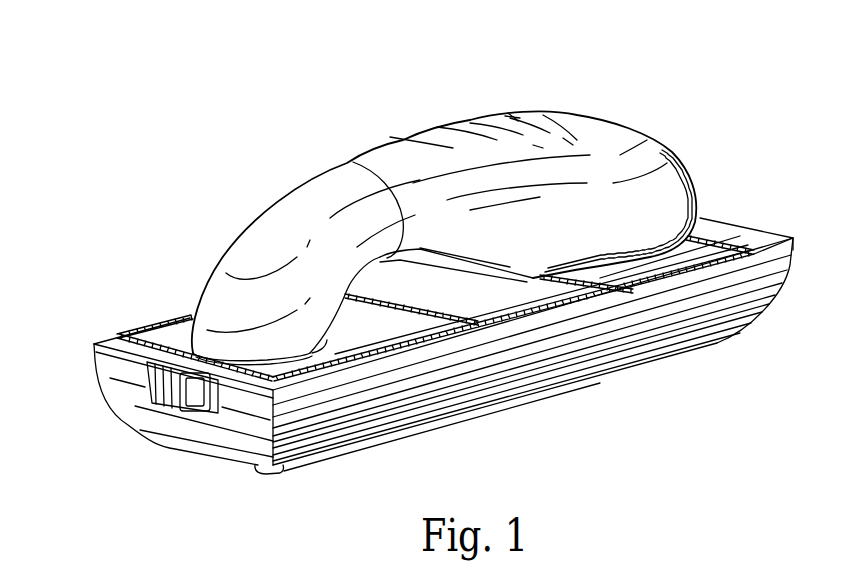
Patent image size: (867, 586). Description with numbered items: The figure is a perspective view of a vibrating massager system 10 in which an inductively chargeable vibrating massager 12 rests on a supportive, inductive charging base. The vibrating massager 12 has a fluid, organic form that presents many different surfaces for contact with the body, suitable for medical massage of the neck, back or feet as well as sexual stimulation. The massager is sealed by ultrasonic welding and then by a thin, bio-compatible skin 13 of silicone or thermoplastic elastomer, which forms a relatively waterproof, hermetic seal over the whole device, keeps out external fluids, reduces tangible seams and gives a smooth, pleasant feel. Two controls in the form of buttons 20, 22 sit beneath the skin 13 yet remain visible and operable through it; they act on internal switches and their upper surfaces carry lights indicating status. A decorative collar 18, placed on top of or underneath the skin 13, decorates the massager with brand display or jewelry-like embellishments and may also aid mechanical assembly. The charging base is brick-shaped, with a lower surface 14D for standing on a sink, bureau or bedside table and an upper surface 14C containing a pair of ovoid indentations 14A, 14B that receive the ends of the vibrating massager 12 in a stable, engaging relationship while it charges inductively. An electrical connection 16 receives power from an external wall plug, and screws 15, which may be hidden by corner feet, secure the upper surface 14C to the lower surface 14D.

The vibrating massager system 10 is at (685, 58).
The vibrating massager 12 is at (571, 120).
The skin 13 is at (673, 150).
The ovoid indentation 14A is at (190, 337).
The ovoid indentation 14B is at (698, 218).
The upper surface 14C is at (762, 240).
The lower surface 14D is at (543, 387).
The screws 15 is at (276, 500).
The electrical connection 16 is at (148, 386).
The decorative collar 18 is at (347, 170).
The button 20 is at (462, 118).
The button 22 is at (512, 117).